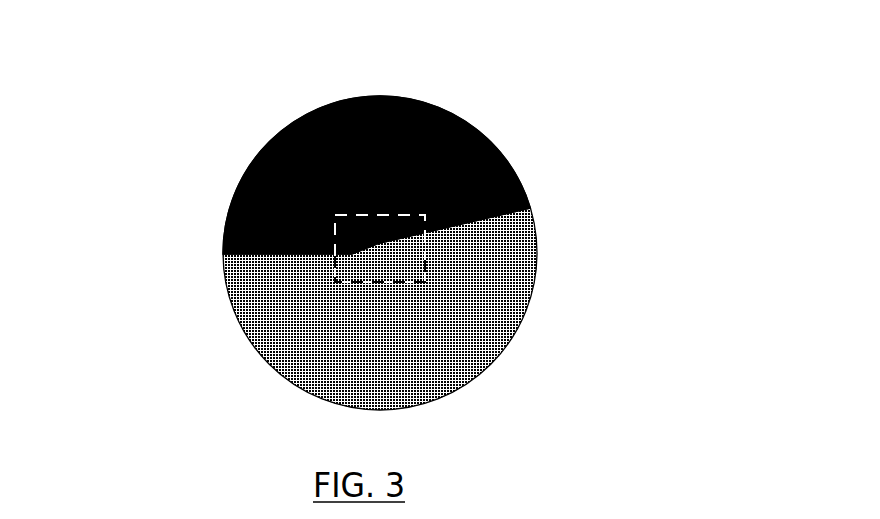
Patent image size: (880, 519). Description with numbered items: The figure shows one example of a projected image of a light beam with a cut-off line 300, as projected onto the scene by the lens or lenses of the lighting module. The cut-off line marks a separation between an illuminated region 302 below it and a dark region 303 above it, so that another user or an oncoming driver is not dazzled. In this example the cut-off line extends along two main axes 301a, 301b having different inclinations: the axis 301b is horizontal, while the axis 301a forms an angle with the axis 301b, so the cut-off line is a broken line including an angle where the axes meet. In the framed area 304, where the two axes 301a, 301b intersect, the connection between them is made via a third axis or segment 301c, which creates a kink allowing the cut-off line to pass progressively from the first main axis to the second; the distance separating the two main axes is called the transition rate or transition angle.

The projected image of a light beam with a cut-off line 300 is at (232, 103).
The axis 301a is at (490, 223).
The axis 301b is at (252, 257).
The third axis or segment 301c is at (380, 243).
The illuminated region 302 is at (453, 388).
The dark region 303 is at (423, 103).
The framed area 304 is at (337, 266).